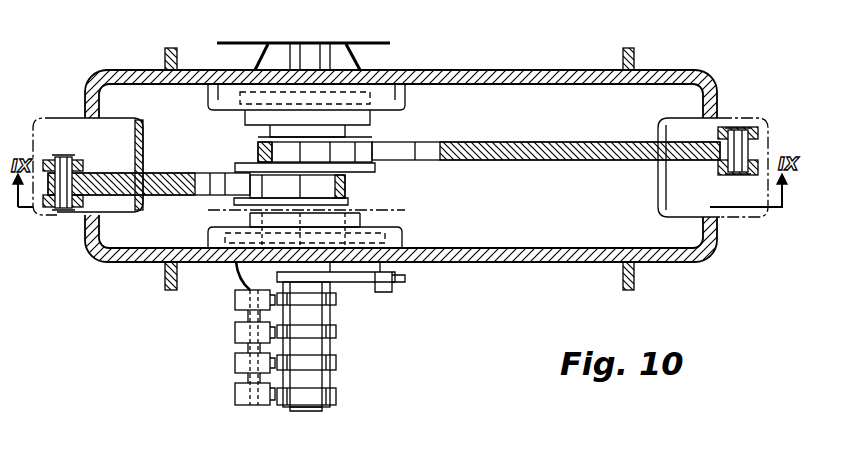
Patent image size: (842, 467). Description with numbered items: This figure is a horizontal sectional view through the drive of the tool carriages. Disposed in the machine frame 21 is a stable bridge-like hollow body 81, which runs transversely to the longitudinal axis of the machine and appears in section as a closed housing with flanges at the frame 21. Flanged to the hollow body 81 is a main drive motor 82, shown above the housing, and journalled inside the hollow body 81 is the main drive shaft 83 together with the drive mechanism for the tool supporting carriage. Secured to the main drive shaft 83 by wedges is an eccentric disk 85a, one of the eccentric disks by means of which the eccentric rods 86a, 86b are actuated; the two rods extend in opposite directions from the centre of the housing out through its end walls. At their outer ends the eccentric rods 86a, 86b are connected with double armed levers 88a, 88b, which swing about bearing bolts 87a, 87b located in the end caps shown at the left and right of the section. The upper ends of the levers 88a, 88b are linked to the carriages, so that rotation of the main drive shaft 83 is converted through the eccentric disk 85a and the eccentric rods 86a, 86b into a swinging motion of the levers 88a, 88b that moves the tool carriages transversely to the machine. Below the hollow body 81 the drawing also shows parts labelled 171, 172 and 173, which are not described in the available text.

The machine frame 21 is at (634, 55).
The hollow body 81 is at (583, 80).
The main drive motor 82 is at (338, 58).
The main drive shaft 83 is at (258, 151).
The eccentric disk 85a is at (383, 136).
The eccentric rod 86a is at (168, 182).
The eccentric rod 86b is at (520, 152).
The bearing bolt 87a is at (70, 168).
The bearing bolt 87b is at (733, 140).
The double armed lever 88a is at (47, 193).
The double armed lever 88b is at (720, 142).
The stator column 171 is at (320, 319).
The stator flange 172 is at (337, 365).
The coil block 173 is at (243, 299).